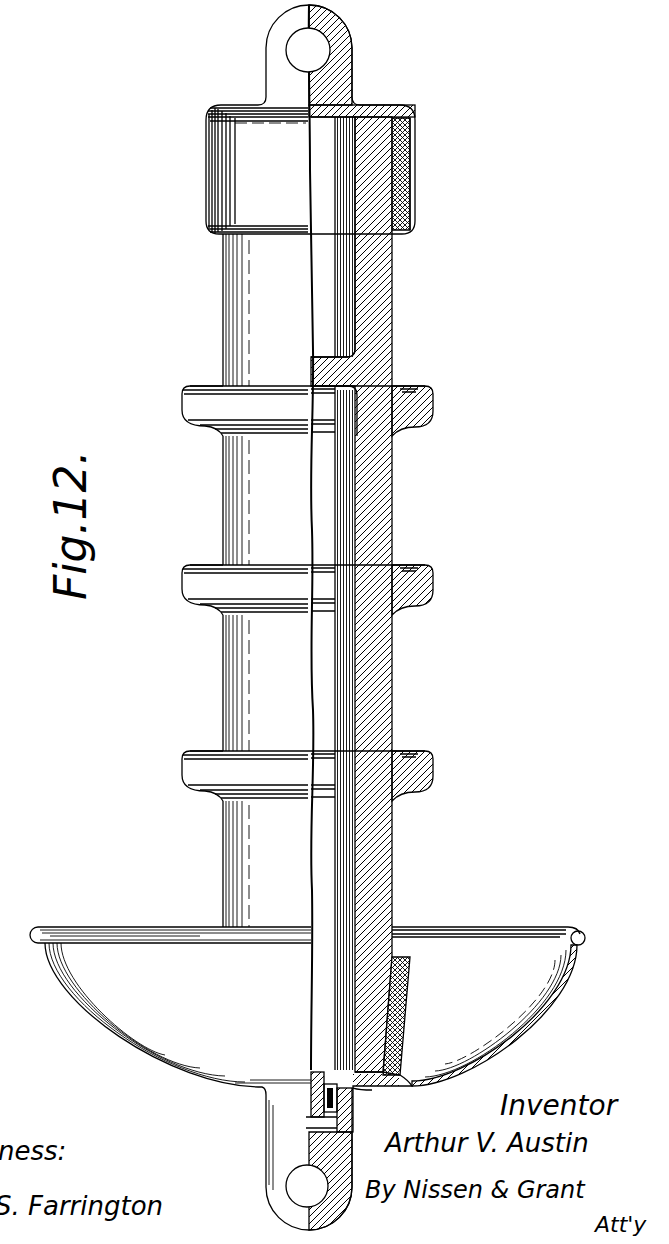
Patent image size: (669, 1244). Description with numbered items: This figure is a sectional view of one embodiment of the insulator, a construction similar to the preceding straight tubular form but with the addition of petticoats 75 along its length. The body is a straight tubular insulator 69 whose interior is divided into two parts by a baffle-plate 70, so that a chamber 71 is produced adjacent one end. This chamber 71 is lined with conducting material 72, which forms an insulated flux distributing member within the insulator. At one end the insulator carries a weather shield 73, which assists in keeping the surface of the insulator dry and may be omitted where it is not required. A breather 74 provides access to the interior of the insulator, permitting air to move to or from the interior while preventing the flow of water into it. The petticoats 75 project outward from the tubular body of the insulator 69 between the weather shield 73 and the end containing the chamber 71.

The straight tubular insulator 69 is at (373, 827).
The baffle-plate 70 is at (313, 370).
The chamber 71 is at (325, 165).
The conducting material 72 is at (350, 252).
The weather shield 73 is at (519, 1003).
The breather 74 is at (317, 1027).
The petticoats 75 is at (420, 577).